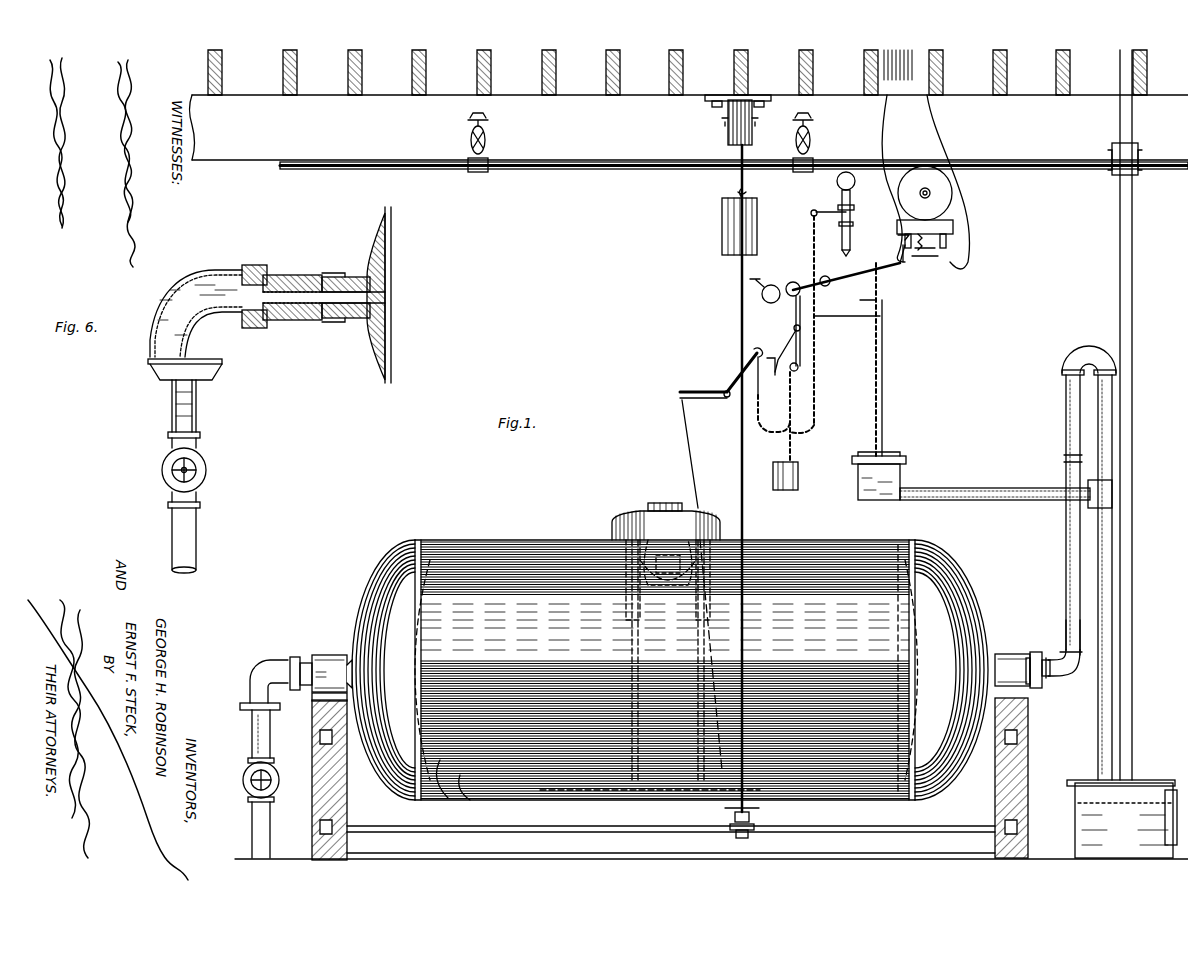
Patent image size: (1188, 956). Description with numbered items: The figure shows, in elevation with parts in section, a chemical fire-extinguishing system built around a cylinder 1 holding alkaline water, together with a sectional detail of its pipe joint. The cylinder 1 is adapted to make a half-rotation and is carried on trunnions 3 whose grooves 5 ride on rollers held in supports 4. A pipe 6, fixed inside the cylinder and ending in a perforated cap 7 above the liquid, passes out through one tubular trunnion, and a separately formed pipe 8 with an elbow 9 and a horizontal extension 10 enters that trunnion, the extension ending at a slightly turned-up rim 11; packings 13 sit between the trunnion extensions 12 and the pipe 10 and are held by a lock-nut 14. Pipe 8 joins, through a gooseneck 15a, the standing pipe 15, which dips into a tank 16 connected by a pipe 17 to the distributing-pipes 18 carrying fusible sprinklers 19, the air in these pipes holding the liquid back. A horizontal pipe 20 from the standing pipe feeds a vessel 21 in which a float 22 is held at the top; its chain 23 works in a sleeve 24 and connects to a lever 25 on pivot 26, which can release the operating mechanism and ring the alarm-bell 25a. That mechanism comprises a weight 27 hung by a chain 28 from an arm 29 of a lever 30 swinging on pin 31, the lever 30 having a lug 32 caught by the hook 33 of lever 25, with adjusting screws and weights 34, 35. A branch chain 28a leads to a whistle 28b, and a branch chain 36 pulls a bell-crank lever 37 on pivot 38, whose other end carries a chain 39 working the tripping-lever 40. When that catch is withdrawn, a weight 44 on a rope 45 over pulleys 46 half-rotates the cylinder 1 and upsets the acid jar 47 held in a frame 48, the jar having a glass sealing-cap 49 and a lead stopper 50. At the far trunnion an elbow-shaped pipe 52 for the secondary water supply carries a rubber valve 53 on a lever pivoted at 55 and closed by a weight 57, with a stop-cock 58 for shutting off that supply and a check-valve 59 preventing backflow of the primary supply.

In FIG. 6, the cylinder 1 is at (396, 295).
In FIG. 1, the cylinder 1 is at (538, 540).
In FIG. 6, the trunnions 3 is at (369, 266).
In FIG. 1, the trunnions 3 is at (338, 654).
In FIG. 1, the supports 4 is at (294, 656).
In FIG. 6, the grooves 5 is at (316, 316).
In FIG. 1, the pipe 6 is at (880, 612).
In FIG. 1, the perforated cap 7 is at (896, 548).
In FIG. 1, the pipe 8 is at (1066, 562).
In FIG. 1, the elbow 9 is at (1070, 676).
In FIG. 1, the horizontal extension 10 is at (1048, 678).
In FIG. 6, the terminal point of horizontal extension 11 is at (282, 280).
In FIG. 6, the extensions of the trunnion 12 is at (268, 322).
In FIG. 6, the packings or washers 13 is at (242, 274).
In FIG. 6, the lock-nut 14 is at (252, 330).
In FIG. 1, the lock-nut 14 is at (262, 662).
In FIG. 1, the standing pipe 15 is at (1065, 526).
In FIG. 1, the gooseneck 15a is at (1066, 355).
In FIG. 1, the tank 16 is at (1074, 798).
In FIG. 1, the pipe 17 is at (1066, 612).
In FIG. 1, the distributing-pipes 18 is at (1014, 170).
In FIG. 1, the fusible sprinklers 19 is at (488, 142).
In FIG. 1, the horizontal pipe 20 is at (1004, 500).
In FIG. 1, the vessel 21 is at (862, 476).
In FIG. 1, the float 22 is at (906, 461).
In FIG. 1, the chain or cable 23 is at (882, 290).
In FIG. 1, the sleeve or stand-pipe 24 is at (886, 336).
In FIG. 1, the lever 25 is at (848, 285).
In FIG. 1, the alarm-bell 25a is at (930, 200).
In FIG. 1, the pivot 26 is at (830, 276).
In FIG. 1, the weight 27 is at (800, 468).
In FIG. 1, the chain 28 is at (790, 385).
In FIG. 1, the branch chain 28a is at (888, 316).
In FIG. 1, the whistle 28b is at (834, 183).
In FIG. 1, the arm 29 is at (792, 330).
In FIG. 1, the lever 30 is at (802, 344).
In FIG. 1, the pin 31 is at (800, 368).
In FIG. 1, the lug 32 is at (813, 240).
In FIG. 1, the hook 33 is at (791, 282).
In FIG. 1, the adjusting screw 34 is at (770, 382).
In FIG. 1, the adjusting weight 35 is at (762, 299).
In FIG. 1, the branch chain 36 is at (768, 434).
In FIG. 1, the bell-crank lever 37 is at (700, 392).
In FIG. 1, the pivot 38 is at (726, 398).
In FIG. 1, the chain 39 is at (692, 452).
In FIG. 1, the tripping-lever 40 is at (810, 208).
In FIG. 1, the weight 44 is at (721, 240).
In FIG. 1, the rope 45 is at (738, 278).
In FIG. 1, the pulleys 46 is at (728, 140).
In FIG. 1, the jar 47 is at (632, 652).
In FIG. 1, the frame 48 is at (626, 603).
In FIG. 1, the glass sealing-cap 49 is at (630, 513).
In FIG. 1, the lead stopper 50 is at (652, 588).
In FIG. 1, the pipe 52 is at (400, 680).
In FIG. 1, the rubber valve 53 is at (430, 790).
In FIG. 1, the pivot 55 is at (462, 790).
In FIG. 1, the weight 57 is at (572, 792).
In FIG. 6, the stop-cock 58 is at (206, 468).
In FIG. 1, the stop-cock 58 is at (243, 776).
In FIG. 6, the check-valve 59 is at (200, 380).